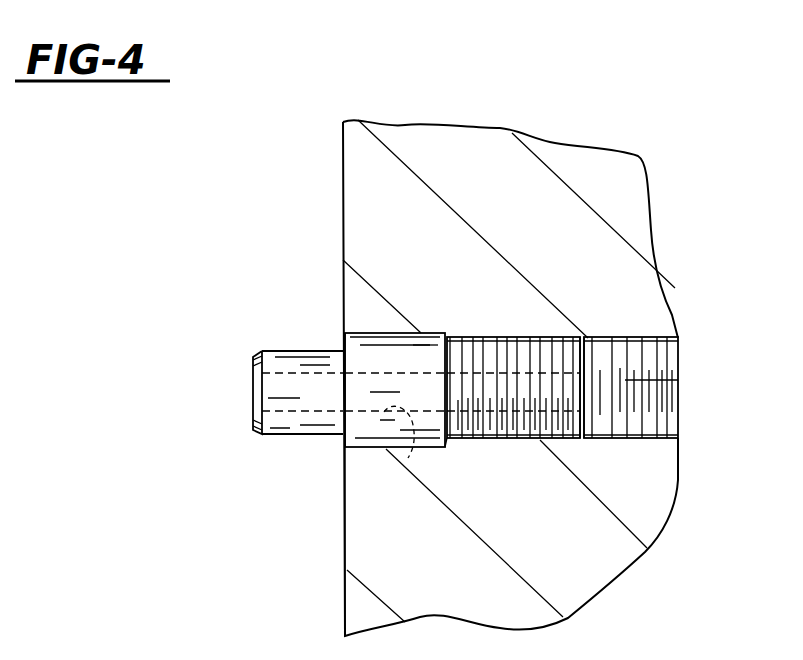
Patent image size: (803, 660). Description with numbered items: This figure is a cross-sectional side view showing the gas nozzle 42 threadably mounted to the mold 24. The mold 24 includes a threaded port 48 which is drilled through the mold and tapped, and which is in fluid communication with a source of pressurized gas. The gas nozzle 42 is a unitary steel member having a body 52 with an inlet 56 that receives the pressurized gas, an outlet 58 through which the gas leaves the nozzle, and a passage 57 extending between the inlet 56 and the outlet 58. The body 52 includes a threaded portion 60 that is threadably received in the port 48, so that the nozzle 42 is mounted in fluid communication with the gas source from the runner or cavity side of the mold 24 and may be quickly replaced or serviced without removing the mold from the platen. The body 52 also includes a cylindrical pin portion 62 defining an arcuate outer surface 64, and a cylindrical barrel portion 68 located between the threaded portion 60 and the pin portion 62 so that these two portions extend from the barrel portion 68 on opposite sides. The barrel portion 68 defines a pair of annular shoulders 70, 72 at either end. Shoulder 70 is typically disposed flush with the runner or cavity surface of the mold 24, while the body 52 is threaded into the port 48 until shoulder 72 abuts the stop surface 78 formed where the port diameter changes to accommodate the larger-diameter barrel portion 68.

The mold 24 is at (622, 158).
The gas nozzle 42 is at (297, 333).
The threaded port 48 is at (683, 340).
The body 52 is at (418, 331).
The inlet 56 is at (593, 345).
The passage 57 is at (406, 456).
The outlet 58 is at (251, 393).
The threaded portion 60 is at (527, 342).
The pin portion 62 is at (277, 437).
The outer surface 64 is at (298, 356).
The barrel portion 68 is at (365, 335).
The annular shoulder 70 is at (340, 442).
The annular shoulder 72 is at (448, 443).
The stop surface 78 is at (440, 342).